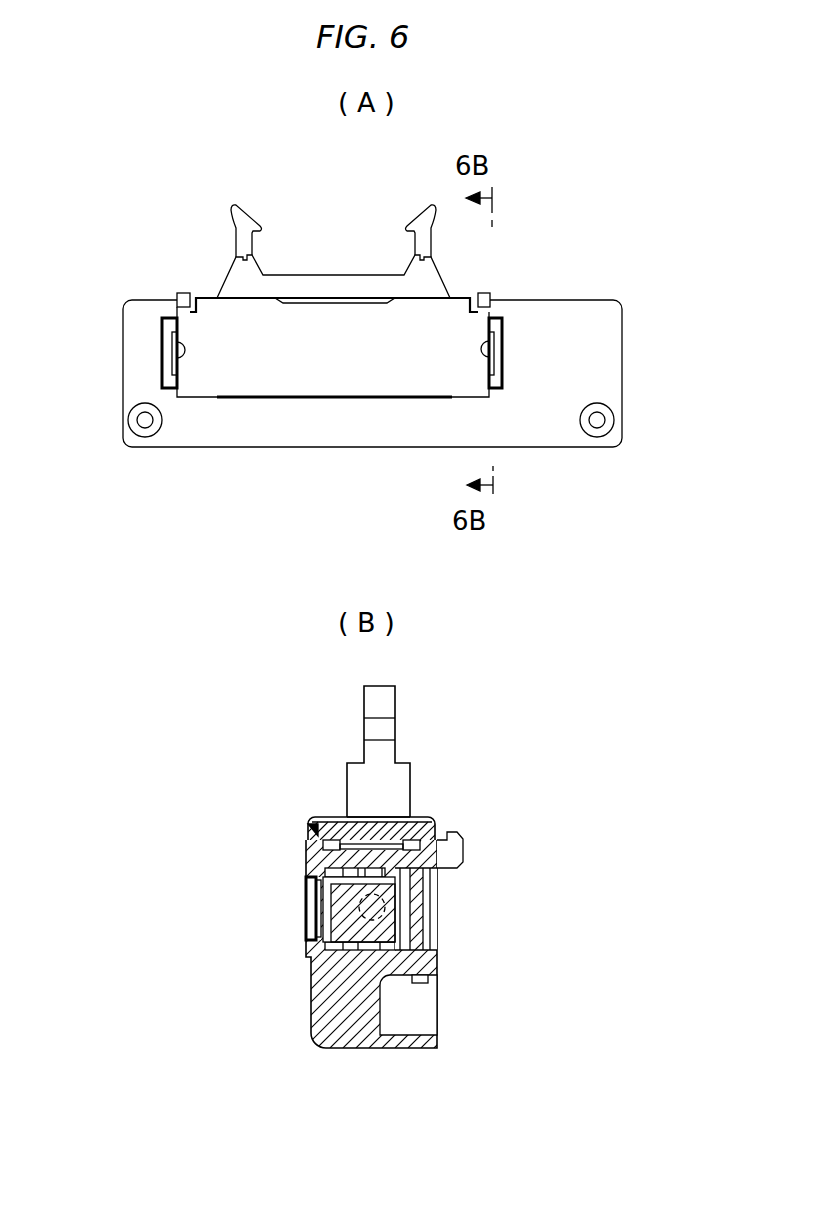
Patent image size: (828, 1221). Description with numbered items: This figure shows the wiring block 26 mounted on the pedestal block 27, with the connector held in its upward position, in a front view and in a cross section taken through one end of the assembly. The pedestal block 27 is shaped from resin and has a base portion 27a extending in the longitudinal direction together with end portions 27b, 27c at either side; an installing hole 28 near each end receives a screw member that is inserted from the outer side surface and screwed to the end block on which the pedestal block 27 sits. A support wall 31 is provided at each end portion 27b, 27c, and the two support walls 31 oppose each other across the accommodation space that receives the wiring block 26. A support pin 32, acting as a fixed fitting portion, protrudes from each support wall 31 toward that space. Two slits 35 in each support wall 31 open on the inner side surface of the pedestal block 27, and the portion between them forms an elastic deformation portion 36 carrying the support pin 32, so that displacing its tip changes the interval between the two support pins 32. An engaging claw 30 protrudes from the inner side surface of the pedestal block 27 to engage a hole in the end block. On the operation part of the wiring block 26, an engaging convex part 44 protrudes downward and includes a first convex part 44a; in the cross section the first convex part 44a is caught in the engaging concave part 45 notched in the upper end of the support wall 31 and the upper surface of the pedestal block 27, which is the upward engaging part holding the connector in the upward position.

The wiring block 26 is at (260, 373).
The pedestal block 27 is at (550, 405).
The base portion 27a is at (345, 420).
The end portion 27b is at (150, 370).
The end portion 27c is at (593, 370).
The installing hole 28 is at (145, 420).
The engaging claw 30 is at (455, 855).
The support wall 31 is at (333, 995).
The support pin 32 is at (398, 918).
The slit 35 is at (400, 886).
The elastic deformation portion 36 is at (348, 925).
The engaging convex part 44 is at (378, 837).
The first convex part 44a is at (322, 820).
The engaging concave part 45 is at (325, 845).